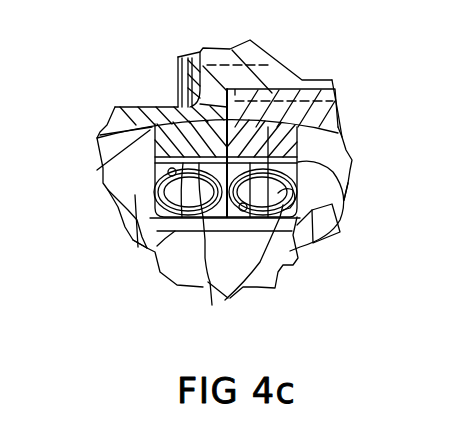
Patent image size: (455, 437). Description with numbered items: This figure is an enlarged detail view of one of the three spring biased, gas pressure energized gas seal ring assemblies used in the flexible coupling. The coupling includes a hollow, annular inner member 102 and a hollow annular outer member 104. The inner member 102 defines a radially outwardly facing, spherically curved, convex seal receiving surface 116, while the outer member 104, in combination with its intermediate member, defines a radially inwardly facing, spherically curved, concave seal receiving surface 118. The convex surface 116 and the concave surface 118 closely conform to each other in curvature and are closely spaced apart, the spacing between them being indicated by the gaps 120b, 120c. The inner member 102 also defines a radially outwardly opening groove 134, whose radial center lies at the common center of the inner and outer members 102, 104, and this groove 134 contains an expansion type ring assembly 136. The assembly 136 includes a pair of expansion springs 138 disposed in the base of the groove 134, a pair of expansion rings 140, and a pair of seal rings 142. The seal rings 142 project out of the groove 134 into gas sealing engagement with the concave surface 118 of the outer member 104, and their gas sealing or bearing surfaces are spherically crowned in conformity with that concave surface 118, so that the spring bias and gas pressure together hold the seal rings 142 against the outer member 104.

The inner member 102 is at (353, 160).
The outer member 104 is at (130, 105).
The convex seal receiving surface 116 is at (300, 158).
The concave seal receiving surface 118 is at (224, 231).
The gap 120b is at (105, 132).
The gap 120c is at (300, 163).
The groove 134 is at (296, 257).
The expansion type ring assembly 136 is at (153, 147).
The expansion springs 138 is at (153, 249).
The expansion rings 140 is at (346, 190).
The seal rings 142 is at (180, 127).